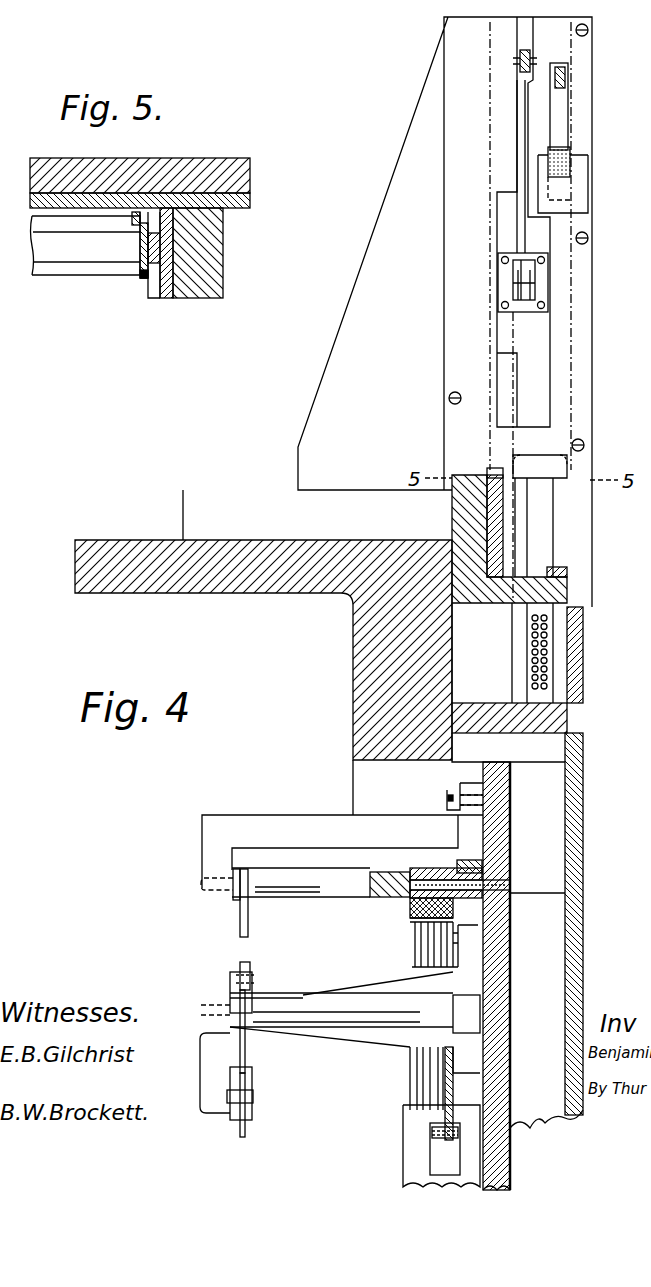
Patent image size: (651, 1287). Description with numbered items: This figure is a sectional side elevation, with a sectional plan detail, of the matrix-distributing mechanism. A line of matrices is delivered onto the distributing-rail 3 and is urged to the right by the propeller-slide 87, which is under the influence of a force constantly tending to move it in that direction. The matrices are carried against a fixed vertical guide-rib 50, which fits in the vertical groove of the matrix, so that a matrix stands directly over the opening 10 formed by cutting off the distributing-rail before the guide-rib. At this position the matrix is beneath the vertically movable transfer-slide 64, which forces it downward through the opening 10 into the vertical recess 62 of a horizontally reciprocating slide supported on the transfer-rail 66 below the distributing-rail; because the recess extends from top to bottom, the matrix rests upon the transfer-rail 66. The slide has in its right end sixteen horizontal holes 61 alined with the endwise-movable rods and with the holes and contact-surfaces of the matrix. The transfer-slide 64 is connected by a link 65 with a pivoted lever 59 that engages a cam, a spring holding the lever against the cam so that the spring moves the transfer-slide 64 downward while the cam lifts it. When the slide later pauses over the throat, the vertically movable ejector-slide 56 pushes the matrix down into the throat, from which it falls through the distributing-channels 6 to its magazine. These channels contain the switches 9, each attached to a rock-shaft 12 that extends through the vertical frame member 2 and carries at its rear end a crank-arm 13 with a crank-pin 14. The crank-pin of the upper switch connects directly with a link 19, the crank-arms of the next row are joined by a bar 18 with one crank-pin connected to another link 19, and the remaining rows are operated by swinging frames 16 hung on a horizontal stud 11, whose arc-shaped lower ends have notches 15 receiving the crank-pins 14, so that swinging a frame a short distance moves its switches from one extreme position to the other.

In FIG. 5, the vertical frame member 2 is at (226, 160).
In FIG. 4, the vertical frame member 2 is at (505, 1030).
In FIG. 5, the distributing-rail 3 is at (72, 252).
In FIG. 4, the distributing-rail 3 is at (540, 566).
In FIG. 4, the distributing-channels 6 is at (517, 930).
In FIG. 4, the switches 9 is at (526, 827).
In FIG. 5, the opening through the distributing-rail 10 is at (140, 277).
In FIG. 4, the horizontal stud 11 is at (495, 882).
In FIG. 4, the rock-shaft 12 is at (500, 905).
In FIG. 4, the crank-arm 13 is at (237, 900).
In FIG. 4, the crank-pin 14 is at (257, 870).
In FIG. 4, the notches 15 is at (435, 1133).
In FIG. 4, the swinging frames 16 is at (412, 958).
In FIG. 4, the bar 18 is at (250, 966).
In FIG. 4, the link 19 is at (250, 920).
In FIG. 5, the guide-rib 50 is at (153, 300).
In FIG. 4, the guide-rib 50 is at (541, 527).
In FIG. 5, the ejector-slide 56 is at (187, 267).
In FIG. 4, the ejector-slide 56 is at (567, 383).
In FIG. 4, the pivoted lever 59 is at (519, 61).
In FIG. 4, the horizontal holes 61 is at (546, 655).
In FIG. 4, the vertical recess 62 is at (563, 683).
In FIG. 5, the transfer-slide 64 is at (147, 280).
In FIG. 4, the transfer-slide 64 is at (523, 308).
In FIG. 4, the link 65 is at (522, 143).
In FIG. 4, the transfer-rail 66 is at (548, 722).
In FIG. 5, the propeller-slide 87 is at (231, 208).
In FIG. 4, the propeller-slide 87 is at (500, 535).